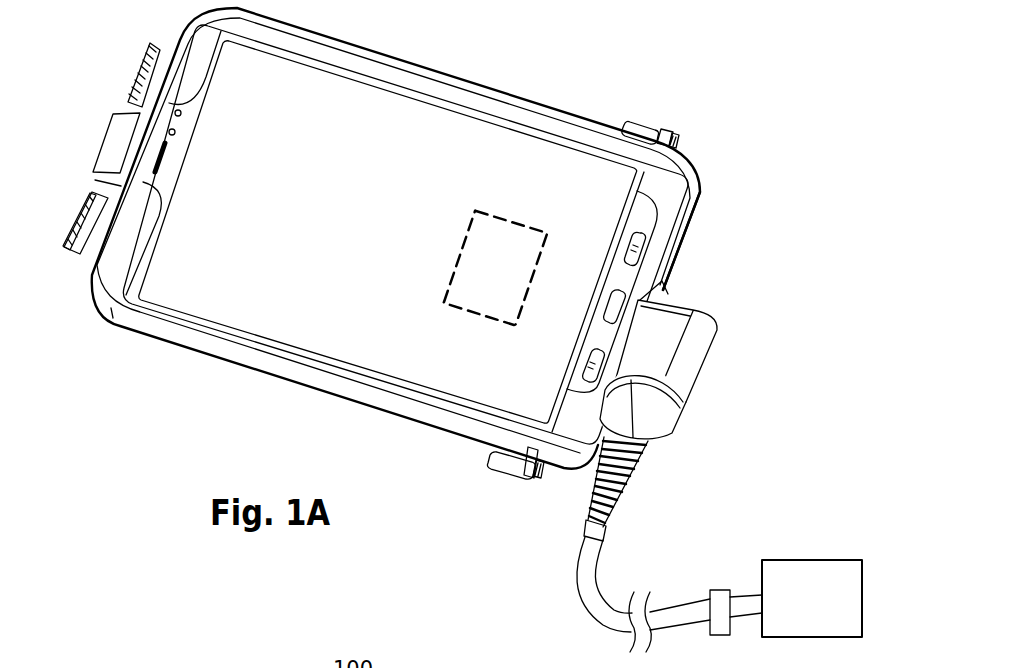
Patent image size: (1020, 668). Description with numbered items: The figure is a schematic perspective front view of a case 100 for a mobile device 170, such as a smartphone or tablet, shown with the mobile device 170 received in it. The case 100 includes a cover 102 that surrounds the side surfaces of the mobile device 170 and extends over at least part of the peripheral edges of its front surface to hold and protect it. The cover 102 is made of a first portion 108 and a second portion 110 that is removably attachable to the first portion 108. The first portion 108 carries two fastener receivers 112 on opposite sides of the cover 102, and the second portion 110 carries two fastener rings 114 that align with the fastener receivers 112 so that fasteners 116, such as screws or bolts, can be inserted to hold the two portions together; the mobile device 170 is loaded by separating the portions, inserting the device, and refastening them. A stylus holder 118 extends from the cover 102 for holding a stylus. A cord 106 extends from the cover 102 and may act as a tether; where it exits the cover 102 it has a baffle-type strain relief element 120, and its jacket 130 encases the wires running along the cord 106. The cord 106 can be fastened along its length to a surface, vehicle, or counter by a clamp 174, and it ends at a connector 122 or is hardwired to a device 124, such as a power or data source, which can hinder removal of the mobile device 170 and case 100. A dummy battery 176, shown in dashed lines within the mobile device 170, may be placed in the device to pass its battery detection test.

The case 100 is at (466, 327).
The cover 102 is at (167, 343).
The first portion 108 is at (390, 416).
The second portion 110 is at (688, 229).
The fastener receiver 112 is at (652, 127).
The fastener ring 114 is at (670, 133).
The fastener 116 is at (676, 141).
The stylus holder 118 is at (110, 135).
The strain relief element 120 is at (630, 495).
The cord 106 is at (580, 555).
The jacket 130 is at (580, 606).
The clamp 174 is at (720, 589).
The connector 122 is at (816, 563).
The device 124 is at (838, 560).
The mobile device 170 is at (273, 92).
The dummy battery 176 is at (495, 208).